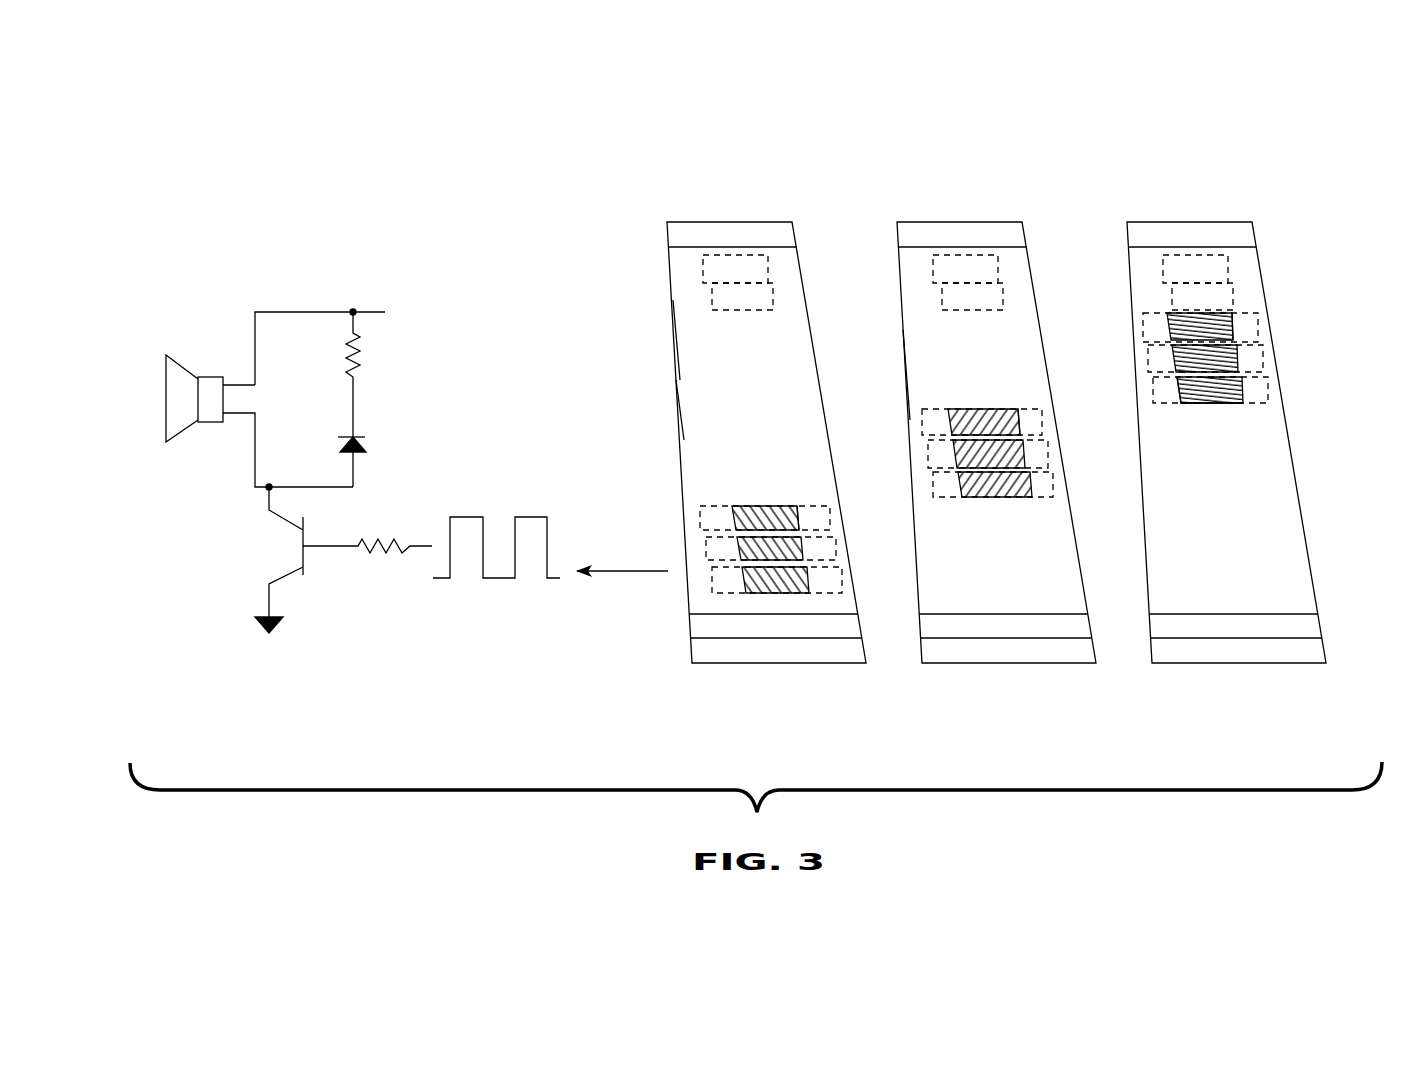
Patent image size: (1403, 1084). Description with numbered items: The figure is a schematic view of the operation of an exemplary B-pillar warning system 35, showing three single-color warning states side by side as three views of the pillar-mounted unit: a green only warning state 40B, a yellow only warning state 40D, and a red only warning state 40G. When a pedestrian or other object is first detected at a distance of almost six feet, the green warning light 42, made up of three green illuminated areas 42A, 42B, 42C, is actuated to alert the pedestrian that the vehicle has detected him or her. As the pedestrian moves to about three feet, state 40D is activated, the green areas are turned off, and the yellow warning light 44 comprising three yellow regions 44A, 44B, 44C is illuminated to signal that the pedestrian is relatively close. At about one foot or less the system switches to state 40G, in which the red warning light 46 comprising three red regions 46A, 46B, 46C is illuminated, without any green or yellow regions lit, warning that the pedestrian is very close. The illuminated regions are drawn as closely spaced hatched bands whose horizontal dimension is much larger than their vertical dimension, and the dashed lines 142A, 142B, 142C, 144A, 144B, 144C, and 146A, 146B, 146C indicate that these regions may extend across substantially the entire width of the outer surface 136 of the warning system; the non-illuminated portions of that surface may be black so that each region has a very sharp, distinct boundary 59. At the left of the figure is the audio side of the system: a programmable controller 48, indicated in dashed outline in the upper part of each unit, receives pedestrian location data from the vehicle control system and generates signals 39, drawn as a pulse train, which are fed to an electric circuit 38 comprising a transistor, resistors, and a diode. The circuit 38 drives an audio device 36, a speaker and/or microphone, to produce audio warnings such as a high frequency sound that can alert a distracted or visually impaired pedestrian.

The B-pillar warning system 35 is at (799, 251).
The audio device 36 is at (165, 423).
The electric circuit 38 is at (424, 346).
The signals 39 is at (498, 578).
The green only warning state 40B is at (672, 335).
The yellow only warning state 40D is at (903, 345).
The red only warning state 40G is at (1178, 393).
The green warning light 42 is at (709, 584).
The green illuminated area 42A is at (735, 518).
The green illuminated area 42B is at (740, 547).
The green illuminated area 42C is at (747, 582).
The yellow warning light 44 is at (933, 495).
The yellow region 44A is at (965, 428).
The yellow region 44B is at (970, 455).
The yellow region 44C is at (973, 490).
The red warning light 46 is at (1148, 408).
The red region 46A is at (1170, 323).
The red region 46B is at (1173, 352).
The red region 46C is at (1175, 378).
The programmable controller 48 is at (705, 292).
The boundary 59 is at (785, 506).
The outer surface 136 is at (710, 408).
The dashed line 142A is at (833, 505).
The dashed line 142B is at (838, 543).
The dashed line 142C is at (845, 580).
The dashed line 144A is at (1043, 424).
The dashed line 144B is at (1049, 452).
The dashed line 144C is at (1054, 487).
The dashed line 146A is at (1258, 318).
The dashed line 146B is at (1262, 350).
The dashed line 146C is at (1268, 390).